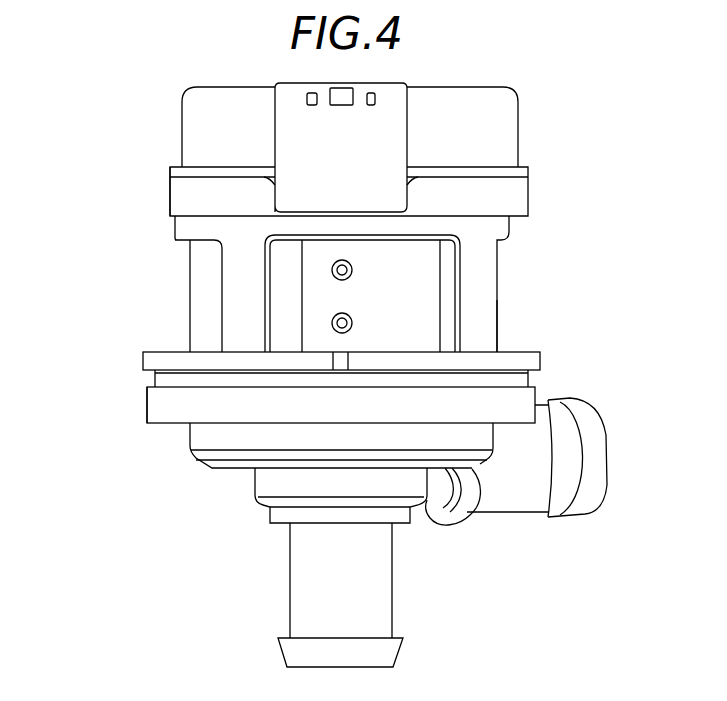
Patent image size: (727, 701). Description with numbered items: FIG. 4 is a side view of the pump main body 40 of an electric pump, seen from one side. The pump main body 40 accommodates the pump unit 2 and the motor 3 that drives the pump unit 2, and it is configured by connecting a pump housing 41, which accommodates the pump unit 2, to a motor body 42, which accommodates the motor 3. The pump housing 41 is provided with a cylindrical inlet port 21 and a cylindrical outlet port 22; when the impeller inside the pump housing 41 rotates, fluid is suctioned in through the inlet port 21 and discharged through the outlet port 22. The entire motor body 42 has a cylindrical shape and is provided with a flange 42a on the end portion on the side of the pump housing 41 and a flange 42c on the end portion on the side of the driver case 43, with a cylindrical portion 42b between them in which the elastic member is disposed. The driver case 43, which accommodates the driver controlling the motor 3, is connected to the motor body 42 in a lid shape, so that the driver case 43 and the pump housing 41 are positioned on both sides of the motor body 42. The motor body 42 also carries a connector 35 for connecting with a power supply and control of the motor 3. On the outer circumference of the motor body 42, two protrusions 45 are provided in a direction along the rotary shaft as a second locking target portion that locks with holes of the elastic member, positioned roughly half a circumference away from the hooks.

The pump unit 2 is at (158, 447).
The motor 3 is at (522, 285).
The inlet port 21 is at (300, 580).
The outlet port 22 is at (522, 495).
The connector 35 is at (287, 130).
The pump main body 40 is at (145, 302).
The pump housing 41 is at (523, 408).
The motor body 42 is at (497, 272).
The flange 42a is at (533, 360).
The cylindrical portion 42b is at (497, 325).
The flange 42c is at (175, 225).
The driver case 43 is at (508, 135).
The protrusions 45 is at (352, 323).